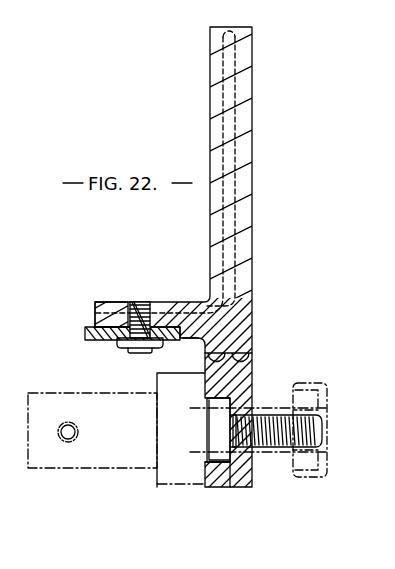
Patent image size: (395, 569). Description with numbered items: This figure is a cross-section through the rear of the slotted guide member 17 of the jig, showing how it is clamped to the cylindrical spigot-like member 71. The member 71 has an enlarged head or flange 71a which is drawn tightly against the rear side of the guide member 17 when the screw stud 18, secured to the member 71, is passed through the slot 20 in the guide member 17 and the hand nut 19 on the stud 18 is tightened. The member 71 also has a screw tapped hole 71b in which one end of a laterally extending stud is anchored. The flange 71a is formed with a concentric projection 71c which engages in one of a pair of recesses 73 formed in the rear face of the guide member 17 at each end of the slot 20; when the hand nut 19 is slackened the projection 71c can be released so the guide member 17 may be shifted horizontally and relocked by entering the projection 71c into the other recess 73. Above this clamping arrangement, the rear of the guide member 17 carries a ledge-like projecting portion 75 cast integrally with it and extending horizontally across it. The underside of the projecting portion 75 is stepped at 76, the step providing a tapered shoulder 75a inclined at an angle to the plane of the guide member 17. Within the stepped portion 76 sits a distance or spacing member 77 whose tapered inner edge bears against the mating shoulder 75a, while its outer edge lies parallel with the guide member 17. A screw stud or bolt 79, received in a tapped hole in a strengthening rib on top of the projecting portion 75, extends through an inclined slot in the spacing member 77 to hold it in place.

The slotted guide member 17 is at (215, 463).
The screw stud 18 is at (278, 448).
The hand nut 19 is at (327, 460).
The slot 20 is at (238, 408).
The cylindrical spigot-like member 71 is at (118, 431).
The enlarged head or flange 71a is at (163, 440).
The screw tapped hole 71b is at (62, 441).
The concentric projection 71c is at (228, 412).
The recess 73 is at (228, 471).
The ledge-like projecting portion 75 is at (175, 312).
The tapered shoulder 75a is at (183, 337).
The stepped portion 76 is at (108, 324).
The distance or spacing member 77 is at (85, 333).
The screw stud or bolt 79 is at (136, 345).